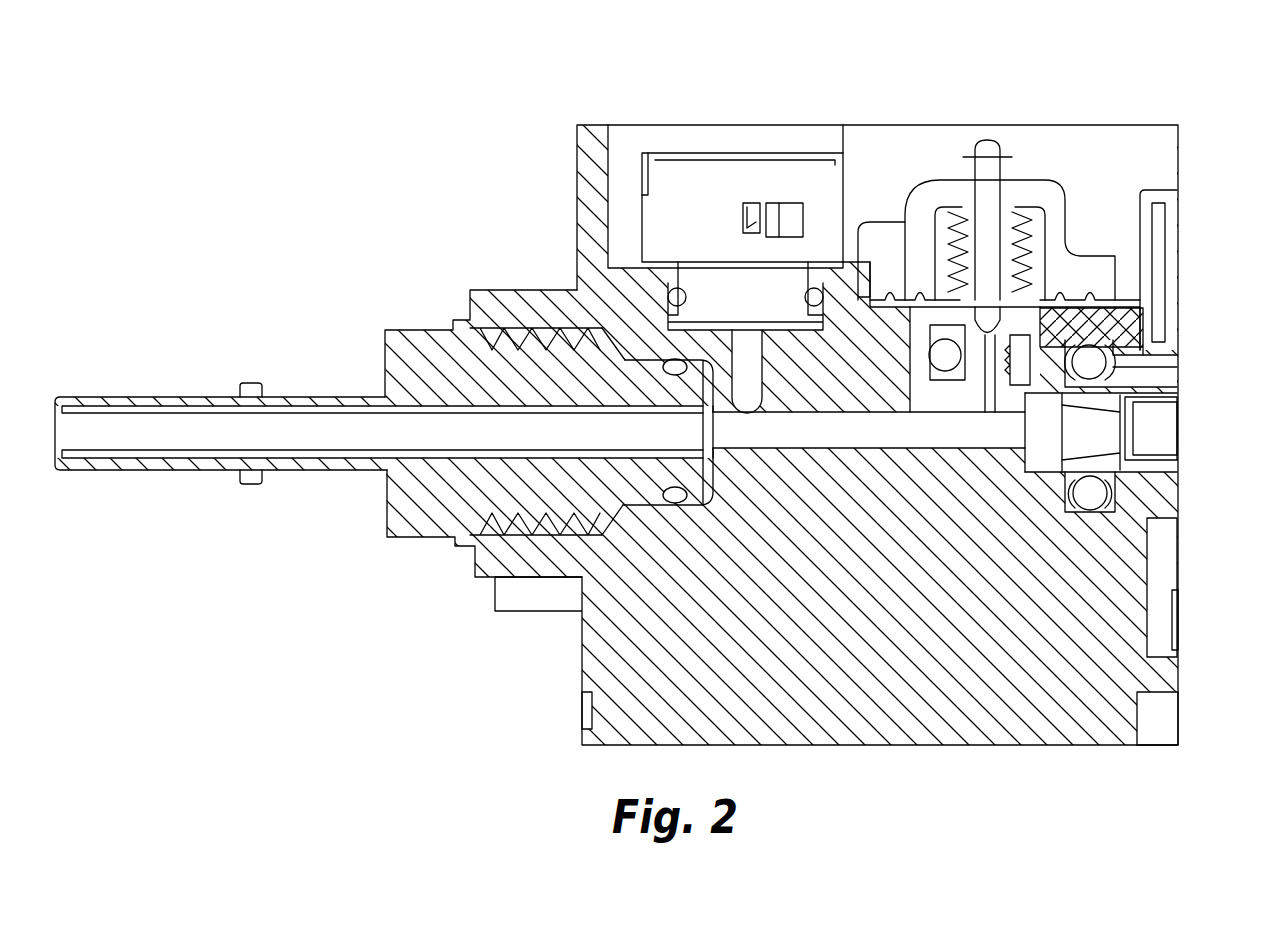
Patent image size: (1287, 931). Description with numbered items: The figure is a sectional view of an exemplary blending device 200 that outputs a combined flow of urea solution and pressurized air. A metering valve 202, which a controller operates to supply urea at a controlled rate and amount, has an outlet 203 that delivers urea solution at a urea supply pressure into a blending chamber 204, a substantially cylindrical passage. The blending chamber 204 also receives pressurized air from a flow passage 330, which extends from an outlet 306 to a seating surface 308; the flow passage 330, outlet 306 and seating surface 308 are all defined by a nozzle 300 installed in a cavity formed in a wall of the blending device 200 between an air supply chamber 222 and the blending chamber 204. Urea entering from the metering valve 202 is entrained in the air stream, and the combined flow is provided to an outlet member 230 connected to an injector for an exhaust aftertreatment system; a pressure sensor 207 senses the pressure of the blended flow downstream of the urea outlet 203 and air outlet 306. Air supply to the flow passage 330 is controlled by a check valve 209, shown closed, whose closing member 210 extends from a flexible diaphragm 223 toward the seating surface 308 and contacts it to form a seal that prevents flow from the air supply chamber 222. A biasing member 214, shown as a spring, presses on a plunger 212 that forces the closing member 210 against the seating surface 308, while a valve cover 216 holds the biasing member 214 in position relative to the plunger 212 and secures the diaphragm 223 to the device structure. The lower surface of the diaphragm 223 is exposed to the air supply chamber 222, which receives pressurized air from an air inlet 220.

The blending device 200 is at (203, 226).
The metering valve 202 is at (1150, 490).
The outlet 203 is at (1070, 440).
The blending chamber 204 is at (616, 435).
The pressure sensor 207 is at (688, 186).
The check valve 209 is at (1060, 300).
The closing member 210 is at (1023, 267).
The plunger 212 is at (993, 327).
The biasing member 214 is at (925, 297).
The valve cover 216 is at (860, 235).
The air inlet 220 is at (915, 427).
The air supply chamber 222 is at (905, 340).
The flexible diaphragm 223 is at (902, 267).
The outlet member 230 is at (400, 355).
The nozzle 300 is at (990, 425).
The outlet 306 is at (1140, 380).
The seating surface 308 is at (1045, 300).
The flow passage 330 is at (1130, 368).